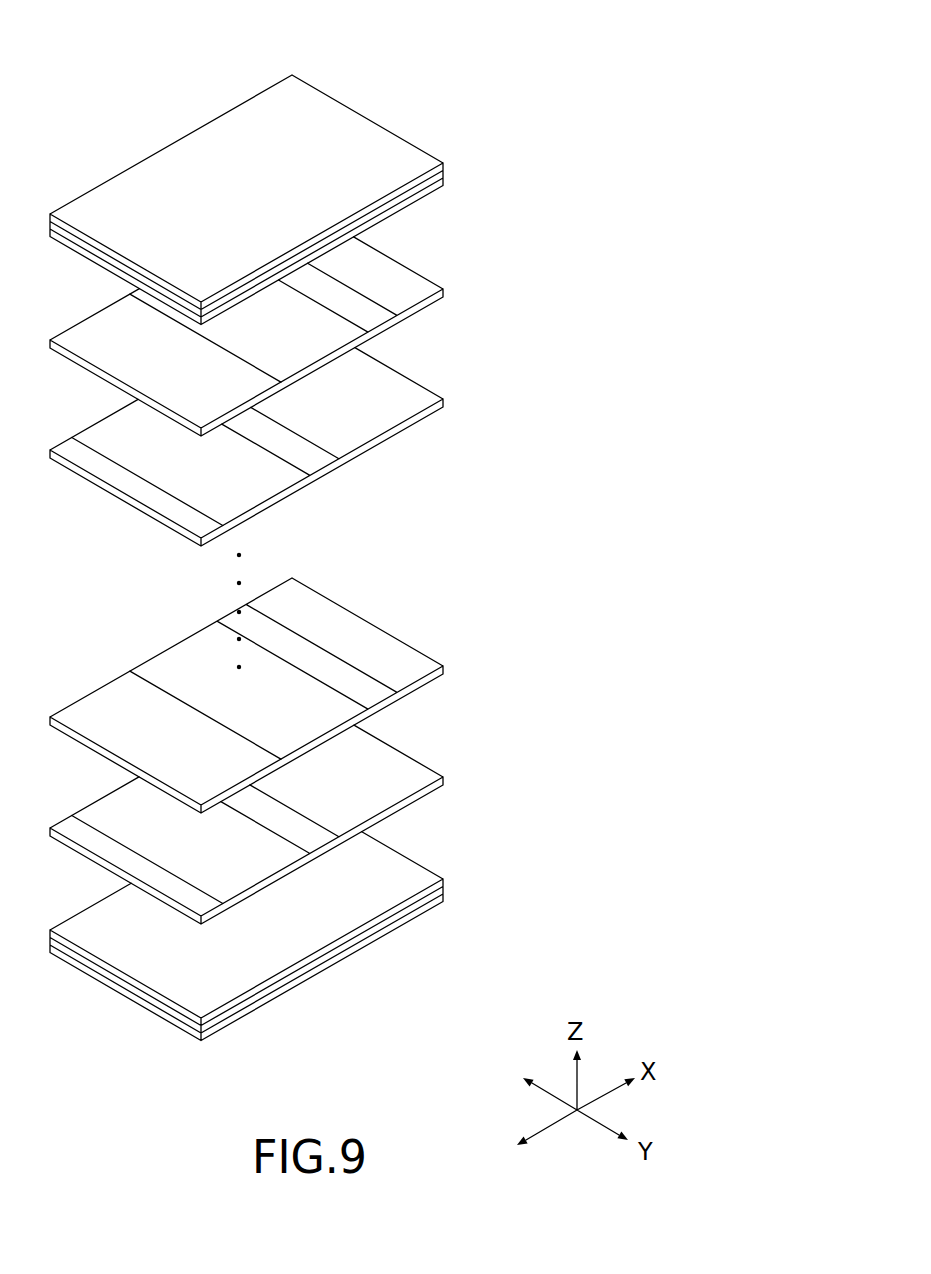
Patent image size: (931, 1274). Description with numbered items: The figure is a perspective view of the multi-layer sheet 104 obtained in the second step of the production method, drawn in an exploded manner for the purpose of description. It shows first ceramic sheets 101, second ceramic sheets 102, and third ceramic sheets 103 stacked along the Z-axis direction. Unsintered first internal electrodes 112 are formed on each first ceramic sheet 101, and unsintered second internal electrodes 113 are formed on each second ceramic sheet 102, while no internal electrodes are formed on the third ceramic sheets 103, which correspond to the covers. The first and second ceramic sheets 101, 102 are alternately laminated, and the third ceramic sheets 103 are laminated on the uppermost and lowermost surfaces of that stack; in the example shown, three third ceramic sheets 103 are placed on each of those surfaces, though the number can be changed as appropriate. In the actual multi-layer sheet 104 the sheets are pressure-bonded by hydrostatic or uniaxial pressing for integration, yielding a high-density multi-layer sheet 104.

The first ceramic sheet 101 is at (306, 525).
The second ceramic sheet 102 is at (306, 636).
The third ceramic sheet 103 is at (464, 170).
The multi-layer sheet 104 is at (306, 526).
The unsintered first internal electrode 112 is at (97, 335).
The unsintered second internal electrode 113 is at (97, 446).